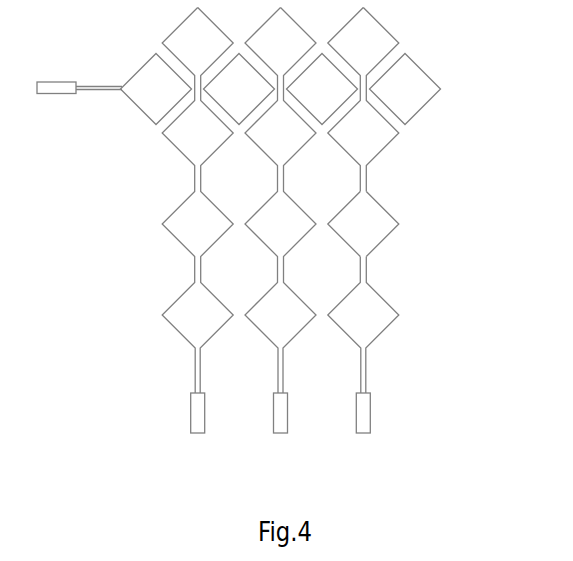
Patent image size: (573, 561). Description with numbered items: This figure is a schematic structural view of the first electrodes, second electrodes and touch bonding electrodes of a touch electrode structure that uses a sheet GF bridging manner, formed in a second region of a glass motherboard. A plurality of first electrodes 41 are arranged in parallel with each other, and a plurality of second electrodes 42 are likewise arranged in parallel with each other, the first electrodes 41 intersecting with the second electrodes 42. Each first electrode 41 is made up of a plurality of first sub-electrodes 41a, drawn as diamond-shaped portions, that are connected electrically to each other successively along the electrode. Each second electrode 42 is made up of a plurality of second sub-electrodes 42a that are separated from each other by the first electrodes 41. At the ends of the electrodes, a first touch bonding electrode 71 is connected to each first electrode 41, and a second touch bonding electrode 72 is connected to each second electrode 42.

The first electrode 41 is at (270, 201).
The first sub-electrode 41a is at (380, 222).
The second electrode 42 is at (311, 116).
The second sub-electrode 42a is at (408, 100).
The first touch bonding electrode 71 is at (287, 420).
The second touch bonding electrode 72 is at (58, 95).